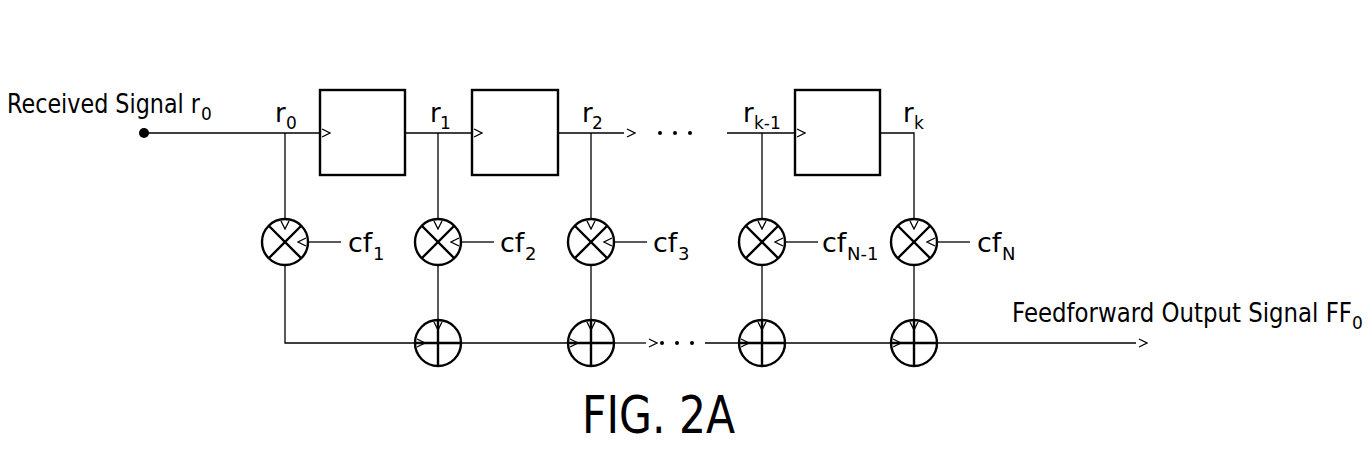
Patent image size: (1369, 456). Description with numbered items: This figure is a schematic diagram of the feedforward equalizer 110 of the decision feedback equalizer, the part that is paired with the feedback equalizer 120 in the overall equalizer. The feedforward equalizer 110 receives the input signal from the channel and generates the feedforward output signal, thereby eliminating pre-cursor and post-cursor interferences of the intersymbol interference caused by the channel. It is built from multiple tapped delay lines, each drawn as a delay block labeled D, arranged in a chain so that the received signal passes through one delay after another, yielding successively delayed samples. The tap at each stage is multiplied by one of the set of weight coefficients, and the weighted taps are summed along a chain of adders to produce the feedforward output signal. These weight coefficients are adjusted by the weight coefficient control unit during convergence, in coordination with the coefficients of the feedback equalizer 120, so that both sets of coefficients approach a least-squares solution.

The feedforward equalizer 110 is at (1132, 80).
The feedback equalizer 120 is at (1167, 455).